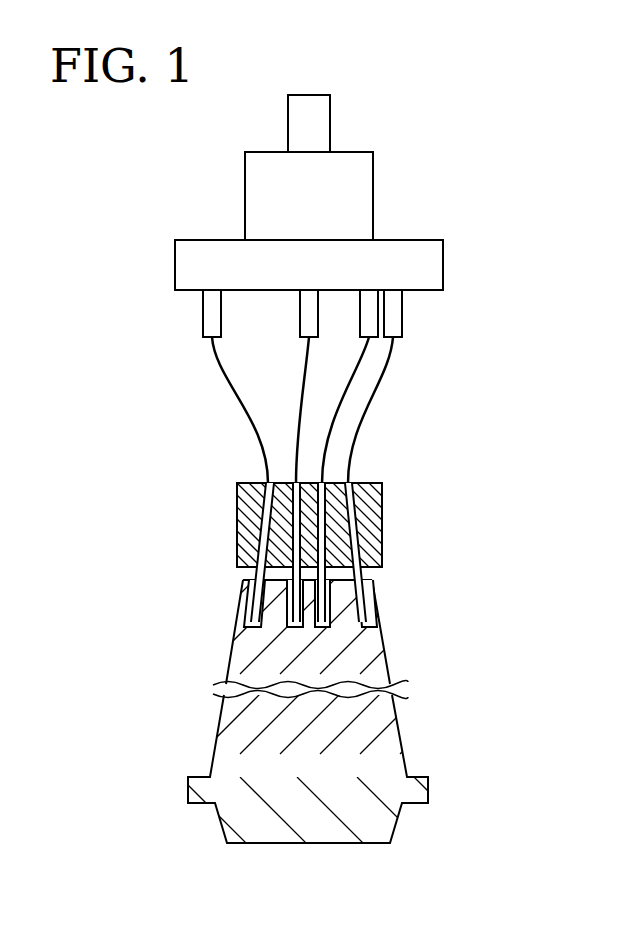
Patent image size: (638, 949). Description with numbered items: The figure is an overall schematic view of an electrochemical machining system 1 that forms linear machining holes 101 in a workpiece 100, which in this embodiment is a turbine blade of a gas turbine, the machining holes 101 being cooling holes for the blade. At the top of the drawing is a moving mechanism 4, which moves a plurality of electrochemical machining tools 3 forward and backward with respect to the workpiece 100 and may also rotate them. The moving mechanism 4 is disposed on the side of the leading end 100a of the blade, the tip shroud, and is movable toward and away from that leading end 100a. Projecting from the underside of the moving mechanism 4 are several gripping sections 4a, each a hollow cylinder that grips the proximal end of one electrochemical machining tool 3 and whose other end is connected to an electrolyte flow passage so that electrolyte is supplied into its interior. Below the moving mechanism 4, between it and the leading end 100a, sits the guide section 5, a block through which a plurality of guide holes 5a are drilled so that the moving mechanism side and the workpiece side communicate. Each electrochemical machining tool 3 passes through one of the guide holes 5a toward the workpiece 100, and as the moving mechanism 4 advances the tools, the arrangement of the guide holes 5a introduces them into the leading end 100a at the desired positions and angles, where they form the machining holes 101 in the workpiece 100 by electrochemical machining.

The electrochemical machining system 1 is at (484, 98).
The electrochemical machining tool 3 is at (297, 429).
The moving mechanism 4 is at (387, 192).
The gripping section 4a is at (475, 328).
The guide section 5 is at (396, 495).
The guide hole 5a is at (295, 510).
The workpiece 100 is at (407, 661).
The leading end 100a is at (249, 578).
The machining hole 101 is at (300, 624).